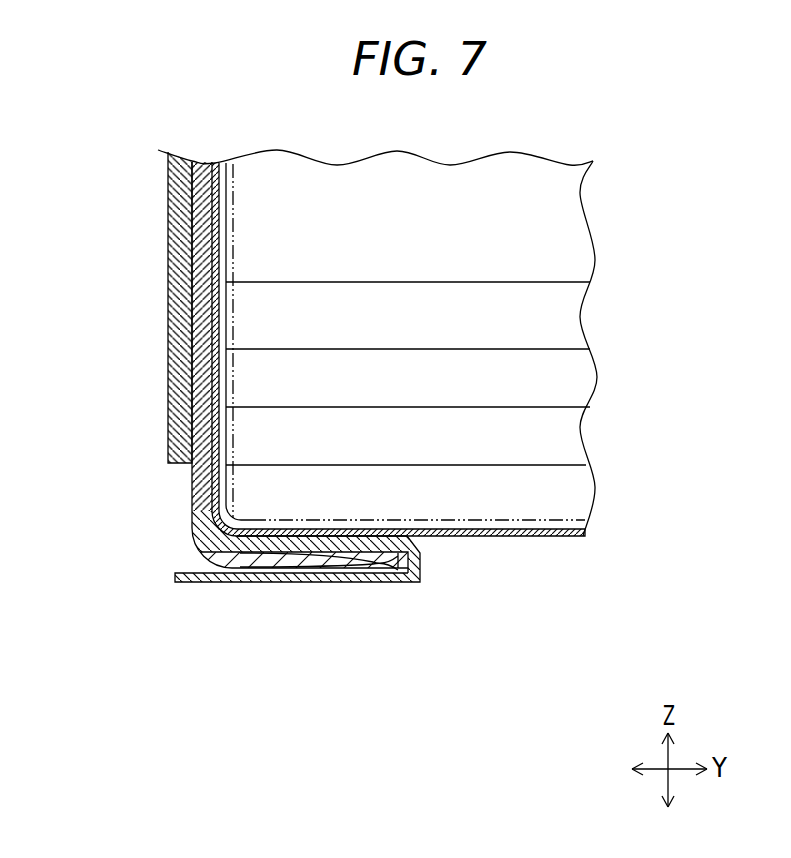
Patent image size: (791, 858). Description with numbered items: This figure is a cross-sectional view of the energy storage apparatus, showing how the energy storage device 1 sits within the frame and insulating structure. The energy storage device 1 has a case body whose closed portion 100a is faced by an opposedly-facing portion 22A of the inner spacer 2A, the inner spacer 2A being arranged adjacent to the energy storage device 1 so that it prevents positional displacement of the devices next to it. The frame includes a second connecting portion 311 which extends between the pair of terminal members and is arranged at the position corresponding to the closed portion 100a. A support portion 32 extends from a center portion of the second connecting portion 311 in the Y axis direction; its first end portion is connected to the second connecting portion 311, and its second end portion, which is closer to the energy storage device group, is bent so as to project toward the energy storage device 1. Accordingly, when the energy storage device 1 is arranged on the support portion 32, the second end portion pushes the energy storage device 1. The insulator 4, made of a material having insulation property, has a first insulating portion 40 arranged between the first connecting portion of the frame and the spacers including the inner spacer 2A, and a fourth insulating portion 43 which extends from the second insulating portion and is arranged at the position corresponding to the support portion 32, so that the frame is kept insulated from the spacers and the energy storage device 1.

The energy storage device 1 is at (545, 448).
The closed portion 100a is at (519, 521).
The first insulating portion 40 is at (163, 320).
The insulator 4 is at (124, 307).
The second connecting portion 311 is at (200, 478).
The fourth insulating portion 43 is at (420, 567).
The support portion 32 is at (336, 556).
The opposedly-facing portion 22A is at (446, 538).
The inner spacer 2A is at (398, 400).